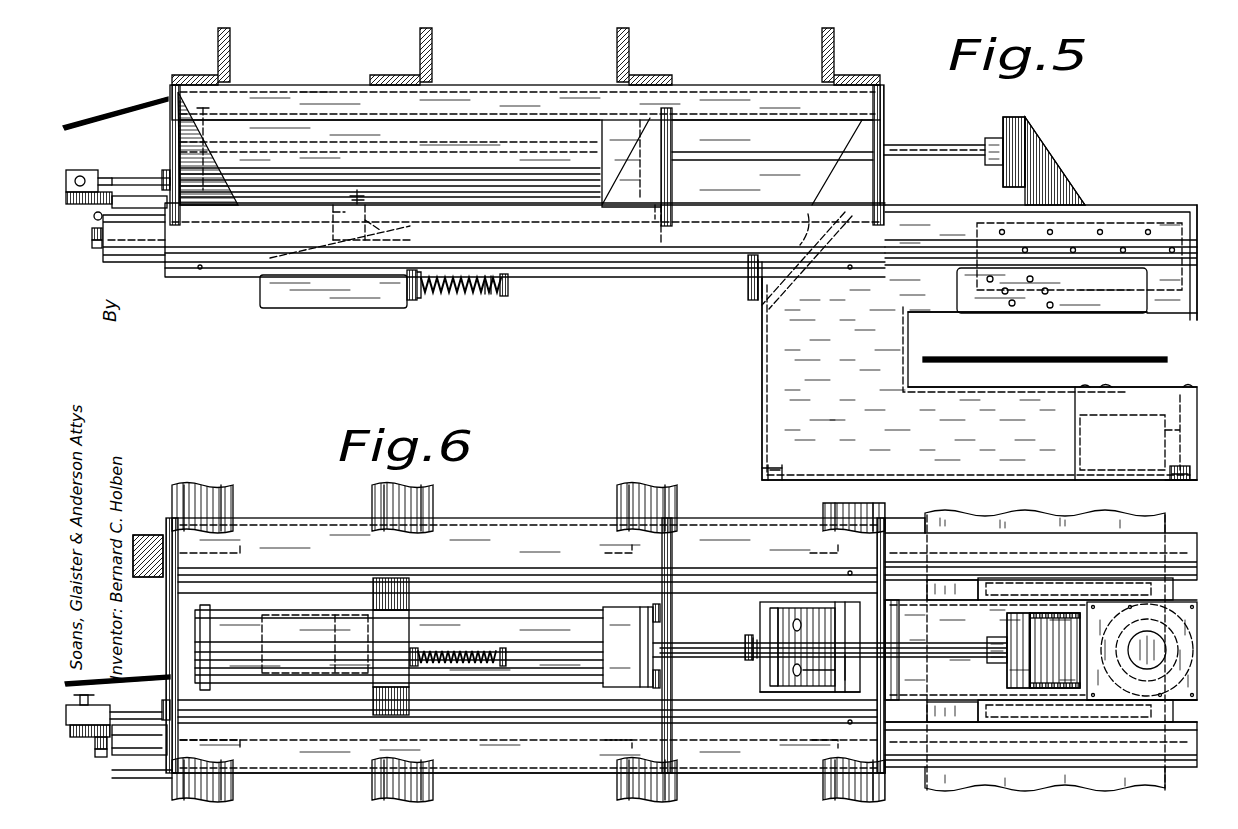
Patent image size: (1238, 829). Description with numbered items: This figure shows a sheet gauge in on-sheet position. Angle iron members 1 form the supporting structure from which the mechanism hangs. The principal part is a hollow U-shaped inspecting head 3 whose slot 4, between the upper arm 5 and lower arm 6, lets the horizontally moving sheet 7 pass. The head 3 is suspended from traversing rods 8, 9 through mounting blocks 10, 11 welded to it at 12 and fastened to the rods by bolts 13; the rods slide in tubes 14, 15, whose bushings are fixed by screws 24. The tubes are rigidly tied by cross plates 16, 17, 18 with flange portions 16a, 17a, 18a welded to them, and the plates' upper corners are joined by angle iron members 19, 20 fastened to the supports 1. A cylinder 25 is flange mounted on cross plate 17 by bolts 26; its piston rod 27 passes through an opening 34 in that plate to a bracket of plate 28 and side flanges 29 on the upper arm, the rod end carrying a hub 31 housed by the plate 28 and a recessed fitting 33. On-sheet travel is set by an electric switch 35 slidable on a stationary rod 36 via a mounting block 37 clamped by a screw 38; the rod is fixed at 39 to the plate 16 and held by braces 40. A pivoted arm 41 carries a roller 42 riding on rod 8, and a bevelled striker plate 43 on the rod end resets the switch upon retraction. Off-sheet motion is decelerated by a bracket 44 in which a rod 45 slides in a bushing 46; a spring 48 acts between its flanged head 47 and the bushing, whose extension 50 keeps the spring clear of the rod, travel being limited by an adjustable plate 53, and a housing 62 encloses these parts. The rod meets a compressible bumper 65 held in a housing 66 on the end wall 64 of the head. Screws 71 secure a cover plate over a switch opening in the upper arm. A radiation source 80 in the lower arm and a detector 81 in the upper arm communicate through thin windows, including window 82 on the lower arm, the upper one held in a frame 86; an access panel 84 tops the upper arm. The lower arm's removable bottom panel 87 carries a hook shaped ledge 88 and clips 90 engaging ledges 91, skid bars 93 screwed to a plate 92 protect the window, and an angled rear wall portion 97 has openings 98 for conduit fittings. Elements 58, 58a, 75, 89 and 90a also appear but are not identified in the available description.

In FIG. 5, the angle iron members 1 is at (231, 45).
In FIG. 6, the angle iron members 1 is at (233, 500).
In FIG. 5, the U-shaped inspecting head 3 is at (775, 360).
In FIG. 6, the U-shaped inspecting head 3 is at (765, 617).
In FIG. 5, the slot 4 is at (930, 348).
In FIG. 5, the upper arm 5 is at (940, 300).
In FIG. 6, the upper arm 5 is at (967, 650).
In FIG. 5, the lower arm 6 is at (958, 402).
In FIG. 5, the sheet 7 is at (1150, 358).
In FIG. 6, the sheet 7 is at (940, 786).
In FIG. 5, the traversing rod 8 is at (148, 258).
In FIG. 6, the traversing rod 8 is at (162, 770).
In FIG. 6, the traversing rod 9 is at (140, 536).
In FIG. 5, the mounting block 10 is at (1087, 226).
In FIG. 6, the mounting block 10 is at (1192, 709).
In FIG. 6, the mounting block 11 is at (1182, 600).
In FIG. 6, the weld 12 is at (1182, 575).
In FIG. 5, the bolts 13 is at (1123, 246).
In FIG. 5, the tube 14 is at (607, 278).
In FIG. 6, the tube 14 is at (548, 712).
In FIG. 6, the tube 15 is at (575, 578).
In FIG. 5, the cross plate 16 is at (170, 140).
In FIG. 6, the cross plate 16 is at (168, 640).
In FIG. 5, the flange portion 16a is at (225, 162).
In FIG. 6, the flange portion 16a is at (242, 557).
In FIG. 5, the cross plate 17 is at (672, 177).
In FIG. 6, the cross plate 17 is at (673, 676).
In FIG. 5, the flange portion 17a is at (625, 203).
In FIG. 6, the flange portion 17a is at (625, 556).
In FIG. 5, the cross plate 18 is at (886, 177).
In FIG. 6, the cross plate 18 is at (886, 676).
In FIG. 5, the flange portion 18a is at (873, 177).
In FIG. 6, the flange portion 18a is at (815, 558).
In FIG. 5, the angle iron member 19 is at (508, 85).
In FIG. 6, the angle iron member 19 is at (492, 775).
In FIG. 6, the angle iron member 20 is at (500, 530).
In FIG. 5, the screws 24 is at (202, 270).
In FIG. 6, the screws 24 is at (850, 576).
In FIG. 5, the cylinder 25 is at (432, 144).
In FIG. 6, the cylinder 25 is at (556, 639).
In FIG. 5, the bolts 26 is at (648, 185).
In FIG. 6, the bolts 26 is at (647, 670).
In FIG. 5, the piston rod 27 is at (910, 145).
In FIG. 6, the piston rod 27 is at (720, 645).
In FIG. 5, the bracket plate 28 is at (1035, 138).
In FIG. 6, the bracket plate 28 is at (1038, 655).
In FIG. 5, the side flanges 29 is at (1042, 168).
In FIG. 6, the side flanges 29 is at (1075, 672).
In FIG. 5, the hub 31 is at (992, 140).
In FIG. 6, the hub 31 is at (992, 664).
In FIG. 5, the recessed fitting 33 is at (1012, 118).
In FIG. 6, the recessed fitting 33 is at (1015, 672).
In FIG. 5, the opening 34 is at (882, 130).
In FIG. 6, the opening 34 is at (884, 612).
In FIG. 5, the electric switch 35 is at (90, 204).
In FIG. 6, the electric switch 35 is at (90, 738).
In FIG. 5, the stationary rod 36 is at (140, 178).
In FIG. 6, the stationary rod 36 is at (137, 733).
In FIG. 5, the mounting block 37 is at (100, 175).
In FIG. 6, the mounting block 37 is at (140, 712).
In FIG. 5, the screw 38 is at (80, 175).
In FIG. 6, the screw 38 is at (88, 700).
In FIG. 5, the rod mounting 39 is at (165, 190).
In FIG. 6, the rod mounting 39 is at (165, 700).
In FIG. 5, the braces 40 is at (140, 114).
In FIG. 6, the braces 40 is at (128, 680).
In FIG. 5, the pivoted arm 41 is at (112, 212).
In FIG. 5, the roller 42 is at (96, 220).
In FIG. 6, the roller 42 is at (98, 750).
In FIG. 5, the bevelled striker plate 43 is at (95, 246).
In FIG. 6, the bevelled striker plate 43 is at (98, 758).
In FIG. 5, the bracket member 44 is at (448, 229).
In FIG. 6, the bracket member 44 is at (403, 564).
In FIG. 5, the rod 45 is at (460, 296).
In FIG. 6, the rod 45 is at (460, 650).
In FIG. 5, the bushing 46 is at (412, 302).
In FIG. 6, the bushing 46 is at (418, 650).
In FIG. 5, the flanged head 47 is at (508, 292).
In FIG. 6, the flanged head 47 is at (502, 648).
In FIG. 5, the spring 48 is at (488, 298).
In FIG. 5, the extension portion 50 is at (419, 295).
In FIG. 5, the plate 53 is at (362, 222).
In FIG. 6, the plate 53 is at (366, 656).
In FIG. 5, the valve stem 58 is at (330, 216).
In FIG. 6, the valve stem 58 is at (335, 622).
In FIG. 5, the valve pin 58a is at (356, 190).
In FIG. 5, the housing 62 is at (344, 302).
In FIG. 6, the housing 62 is at (262, 617).
In FIG. 5, the outer end wall 64 is at (760, 405).
In FIG. 6, the outer end wall 64 is at (760, 690).
In FIG. 5, the bumper 65 is at (746, 290).
In FIG. 6, the bumper 65 is at (745, 655).
In FIG. 5, the housing structure 66 is at (756, 302).
In FIG. 6, the housing structure 66 is at (755, 665).
In FIG. 5, the screws 71 is at (1030, 295).
In FIG. 5, the guide bar 75 is at (1000, 305).
In FIG. 6, the guide bar 75 is at (962, 602).
In FIG. 5, the radiation source 80 is at (1125, 430).
In FIG. 6, the radiation source 80 is at (1170, 655).
In FIG. 5, the radiation detector 81 is at (1188, 275).
In FIG. 6, the radiation detector 81 is at (1192, 640).
In FIG. 5, the window 82 is at (1140, 387).
In FIG. 5, the access panel 84 is at (1176, 210).
In FIG. 6, the access panel 84 is at (1190, 686).
In FIG. 5, the frame 86 is at (1188, 316).
In FIG. 5, the removable panel 87 is at (985, 481).
In FIG. 5, the hook shaped ledge 88 is at (778, 468).
In FIG. 5, the stop lug 89 is at (762, 472).
In FIG. 5, the clips 90 is at (1186, 468).
In FIG. 5, the stop foot 90a is at (1180, 481).
In FIG. 5, the supporting ledges 91 is at (1190, 476).
In FIG. 5, the plate 92 is at (1085, 386).
In FIG. 5, the skid bars 93 is at (1104, 386).
In FIG. 5, the angularly disposed wall portion 97 is at (812, 212).
In FIG. 6, the angularly disposed wall portion 97 is at (846, 684).
In FIG. 5, the openings 98 is at (795, 237).
In FIG. 6, the openings 98 is at (805, 670).